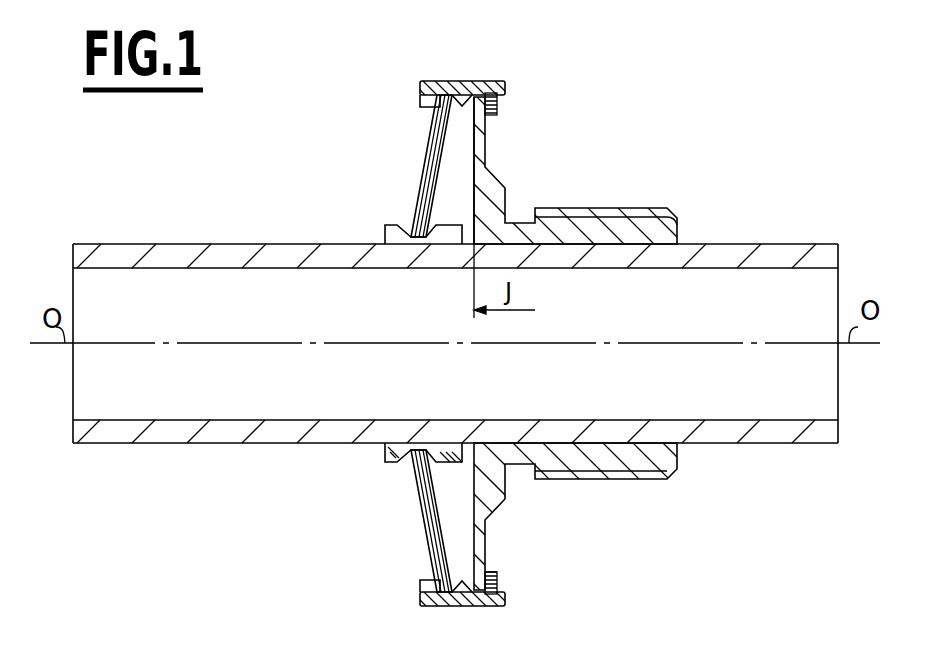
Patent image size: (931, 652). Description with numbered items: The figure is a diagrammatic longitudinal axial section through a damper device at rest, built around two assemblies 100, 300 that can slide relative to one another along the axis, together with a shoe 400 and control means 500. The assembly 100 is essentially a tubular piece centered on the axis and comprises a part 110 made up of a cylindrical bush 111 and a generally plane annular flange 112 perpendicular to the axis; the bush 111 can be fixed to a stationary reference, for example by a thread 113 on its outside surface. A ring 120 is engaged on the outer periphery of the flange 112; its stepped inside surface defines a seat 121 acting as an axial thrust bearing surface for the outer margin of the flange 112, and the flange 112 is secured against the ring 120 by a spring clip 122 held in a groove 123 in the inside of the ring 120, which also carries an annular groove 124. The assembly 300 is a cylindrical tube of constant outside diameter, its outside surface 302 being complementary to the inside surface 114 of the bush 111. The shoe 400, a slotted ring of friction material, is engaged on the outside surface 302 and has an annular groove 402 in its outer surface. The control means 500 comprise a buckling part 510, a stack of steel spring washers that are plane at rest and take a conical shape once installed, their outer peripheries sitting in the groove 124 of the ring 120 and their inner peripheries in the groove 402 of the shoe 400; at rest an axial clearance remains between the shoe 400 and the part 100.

The assembly 100 is at (544, 190).
The part 110 is at (621, 200).
The cylindrical bush 111 is at (660, 235).
The flange 112 is at (484, 142).
The thread 113 is at (615, 487).
The inside surface 114 is at (607, 252).
The ring 120 is at (460, 74).
The seat 121 is at (488, 574).
The spring clip 122 is at (497, 583).
The groove 123 is at (496, 74).
The annular groove 124 is at (428, 556).
The assembly 300 is at (257, 240).
The outside surface 302 is at (115, 240).
The shoe 400 is at (376, 227).
The annular groove 402 is at (408, 217).
The control means 500 is at (415, 520).
The buckling part 510 is at (418, 477).